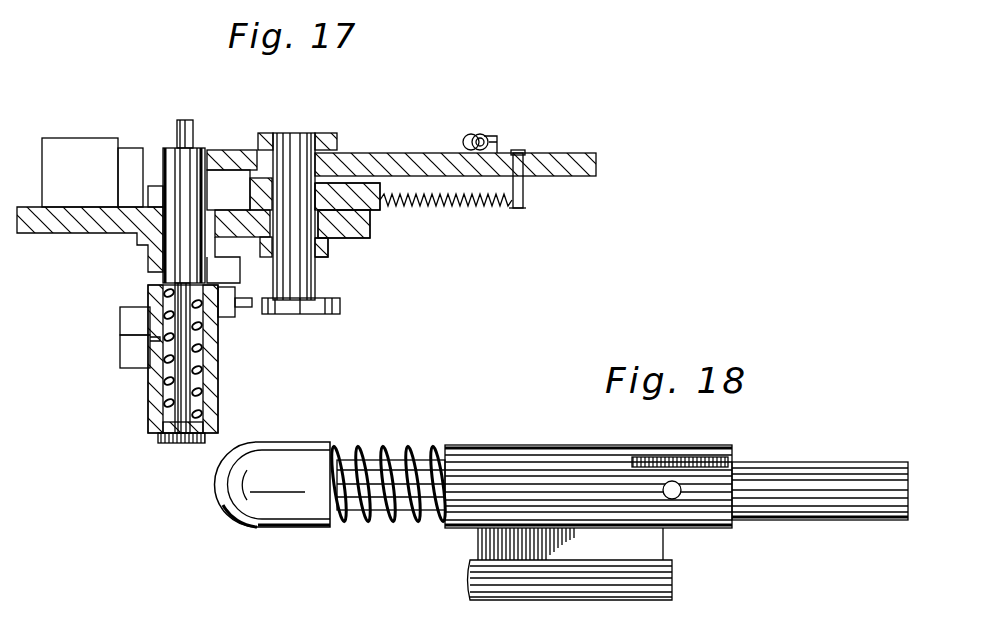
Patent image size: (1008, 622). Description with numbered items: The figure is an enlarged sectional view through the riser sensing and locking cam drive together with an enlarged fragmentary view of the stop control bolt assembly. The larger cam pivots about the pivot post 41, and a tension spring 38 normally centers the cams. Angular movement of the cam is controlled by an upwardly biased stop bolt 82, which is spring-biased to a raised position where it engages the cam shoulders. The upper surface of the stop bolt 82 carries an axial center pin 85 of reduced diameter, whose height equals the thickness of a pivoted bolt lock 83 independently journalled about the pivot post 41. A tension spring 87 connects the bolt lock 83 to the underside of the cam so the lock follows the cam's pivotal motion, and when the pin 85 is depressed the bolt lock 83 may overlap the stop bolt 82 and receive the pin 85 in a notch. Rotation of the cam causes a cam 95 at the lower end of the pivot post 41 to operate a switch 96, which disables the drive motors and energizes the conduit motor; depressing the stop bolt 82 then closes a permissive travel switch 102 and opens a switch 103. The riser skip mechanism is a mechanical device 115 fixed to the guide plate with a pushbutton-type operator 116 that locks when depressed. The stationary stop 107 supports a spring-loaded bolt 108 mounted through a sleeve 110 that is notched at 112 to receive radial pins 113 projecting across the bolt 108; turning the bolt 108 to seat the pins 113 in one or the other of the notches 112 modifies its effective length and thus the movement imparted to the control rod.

In FIG. 17, the tension spring 38 is at (487, 136).
In FIG. 17, the pivot post 41 is at (317, 283).
In FIG. 17, the stop bolt 82 is at (180, 258).
In FIG. 17, the bolt lock 83 is at (155, 188).
In FIG. 17, the center pin 85 is at (192, 132).
In FIG. 17, the tension spring 87 is at (493, 207).
In FIG. 17, the cam 95 is at (308, 316).
In FIG. 17, the switch 96 is at (232, 318).
In FIG. 17, the permissive travel switch 102 is at (127, 360).
In FIG. 17, the switch 103 is at (127, 320).
In FIG. 18, the stationary stop 107 is at (670, 590).
In FIG. 18, the spring-loaded bolt 108 is at (823, 472).
In FIG. 18, the sleeve 110 is at (592, 452).
In FIG. 18, the notches 112 is at (705, 490).
In FIG. 18, the radial pins 113 is at (661, 491).
In FIG. 17, the mechanical device 115 is at (85, 122).
In FIG. 17, the operator 116 is at (126, 193).